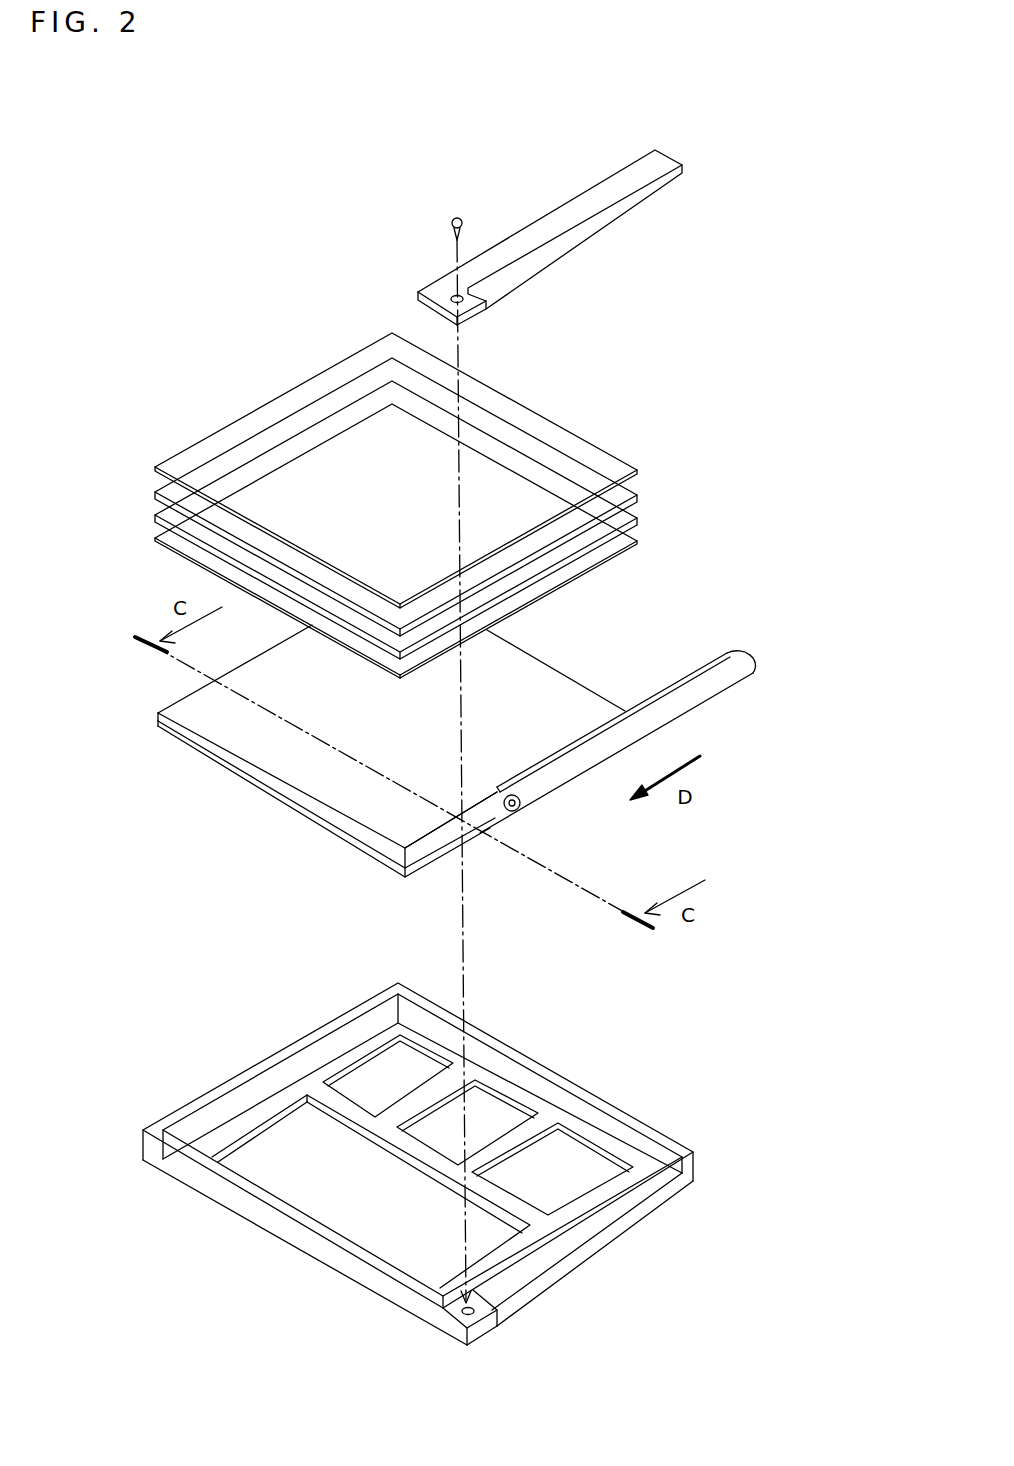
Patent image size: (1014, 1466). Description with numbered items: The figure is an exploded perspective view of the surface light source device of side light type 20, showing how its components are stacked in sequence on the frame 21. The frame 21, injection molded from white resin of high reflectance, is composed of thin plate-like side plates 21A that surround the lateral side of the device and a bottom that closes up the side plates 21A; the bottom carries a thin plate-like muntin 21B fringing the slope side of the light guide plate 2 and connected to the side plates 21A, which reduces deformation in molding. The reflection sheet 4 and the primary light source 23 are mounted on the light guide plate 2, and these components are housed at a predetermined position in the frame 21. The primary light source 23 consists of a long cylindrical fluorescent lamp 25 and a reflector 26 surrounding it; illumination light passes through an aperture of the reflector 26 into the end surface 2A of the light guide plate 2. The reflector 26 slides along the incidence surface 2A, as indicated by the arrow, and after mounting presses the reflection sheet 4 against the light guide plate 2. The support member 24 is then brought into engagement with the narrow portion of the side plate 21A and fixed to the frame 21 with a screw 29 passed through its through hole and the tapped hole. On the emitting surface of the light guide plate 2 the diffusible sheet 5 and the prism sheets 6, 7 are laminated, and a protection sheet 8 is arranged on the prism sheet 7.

The surface light source device of side light type 20 is at (278, 190).
The light guide plate 2 is at (382, 774).
The end surface 2A is at (430, 843).
The reflection sheet 4 is at (333, 830).
The diffusible sheet 5 is at (597, 532).
The prism sheet 6 is at (595, 518).
The prism sheet 7 is at (595, 494).
The protection sheet 8 is at (595, 470).
The frame 21 is at (476, 1164).
The side plates 21A is at (668, 1133).
The muntin 21B is at (552, 1222).
The primary light source 23 is at (640, 699).
The support member 24 is at (565, 215).
The fluorescent lamp 25 is at (520, 806).
The reflector 26 is at (662, 717).
The screw 29 is at (447, 226).